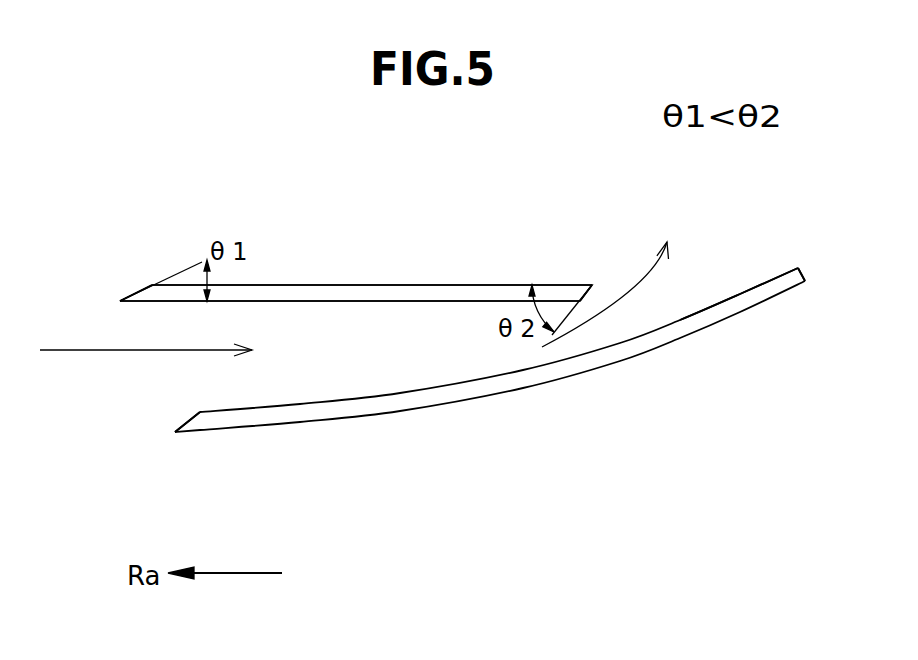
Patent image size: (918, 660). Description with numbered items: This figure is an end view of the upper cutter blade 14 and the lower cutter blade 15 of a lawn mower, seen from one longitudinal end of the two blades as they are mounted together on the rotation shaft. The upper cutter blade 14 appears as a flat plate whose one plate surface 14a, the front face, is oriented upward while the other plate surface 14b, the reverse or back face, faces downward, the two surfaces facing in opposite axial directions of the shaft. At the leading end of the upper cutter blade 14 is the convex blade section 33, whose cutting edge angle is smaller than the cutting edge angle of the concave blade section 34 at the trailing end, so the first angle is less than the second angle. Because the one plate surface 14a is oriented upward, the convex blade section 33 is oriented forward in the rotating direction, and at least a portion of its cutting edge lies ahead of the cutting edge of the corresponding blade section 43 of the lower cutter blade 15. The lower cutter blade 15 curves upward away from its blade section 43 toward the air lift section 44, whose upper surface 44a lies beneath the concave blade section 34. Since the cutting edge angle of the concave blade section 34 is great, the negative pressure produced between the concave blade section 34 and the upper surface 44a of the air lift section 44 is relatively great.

The upper cutter blade 14 is at (339, 282).
The one plate surface 14a is at (395, 285).
The other plate surface 14b is at (380, 302).
The lower cutter blade 15 is at (365, 423).
The convex blade section 33 is at (149, 284).
The concave blade section 34 is at (590, 298).
The blade section 43 is at (185, 426).
The air lift section 44 is at (778, 288).
The upper surface 44a is at (733, 295).